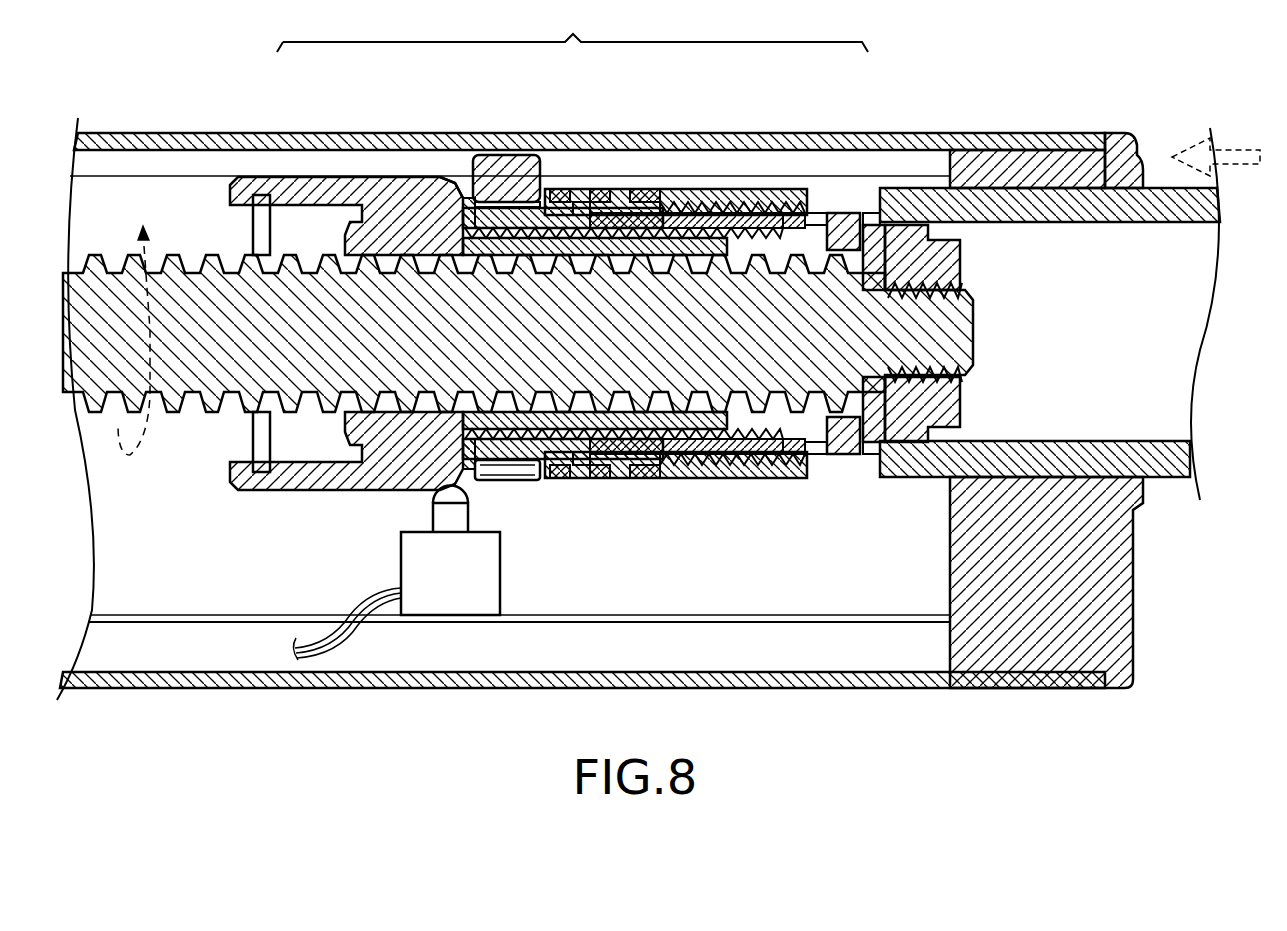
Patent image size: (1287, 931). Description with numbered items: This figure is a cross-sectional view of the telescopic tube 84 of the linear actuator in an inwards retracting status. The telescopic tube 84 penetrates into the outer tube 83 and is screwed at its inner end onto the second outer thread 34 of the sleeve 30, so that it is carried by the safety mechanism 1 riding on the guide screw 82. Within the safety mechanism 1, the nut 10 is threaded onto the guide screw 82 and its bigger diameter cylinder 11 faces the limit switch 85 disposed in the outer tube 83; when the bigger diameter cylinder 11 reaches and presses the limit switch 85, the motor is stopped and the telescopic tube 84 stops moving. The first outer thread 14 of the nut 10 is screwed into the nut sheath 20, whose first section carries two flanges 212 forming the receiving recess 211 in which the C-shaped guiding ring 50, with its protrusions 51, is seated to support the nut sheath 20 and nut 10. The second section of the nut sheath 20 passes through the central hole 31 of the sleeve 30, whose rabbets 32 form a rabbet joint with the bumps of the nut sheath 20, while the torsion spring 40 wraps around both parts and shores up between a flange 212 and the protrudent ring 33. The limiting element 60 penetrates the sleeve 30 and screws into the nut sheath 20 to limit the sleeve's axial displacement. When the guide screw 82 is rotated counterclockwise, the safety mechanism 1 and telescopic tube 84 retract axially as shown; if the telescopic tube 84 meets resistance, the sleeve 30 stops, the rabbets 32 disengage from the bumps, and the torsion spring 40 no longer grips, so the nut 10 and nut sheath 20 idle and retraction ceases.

The safety mechanism 1 is at (572, 128).
The nut 10 is at (347, 180).
The bigger diameter cylinder 11 is at (310, 182).
The first outer thread 14 is at (707, 222).
The nut sheath 20 is at (552, 188).
The receiving recess 211 is at (455, 228).
The flanges 212 is at (465, 205).
The sleeve 30 is at (665, 205).
The central hole 31 is at (752, 213).
The rabbets 32 is at (600, 188).
The protrudent ring 33 is at (657, 188).
The second outer thread 34 is at (778, 225).
The torsion spring 40 is at (613, 198).
The guiding ring 50 is at (512, 152).
The protrusions 51 is at (505, 160).
The limiting element 60 is at (858, 205).
The guide screw 82 is at (173, 363).
The outer tube 83 is at (925, 138).
The telescopic tube 84 is at (1070, 200).
The limit switches 85 is at (472, 577).